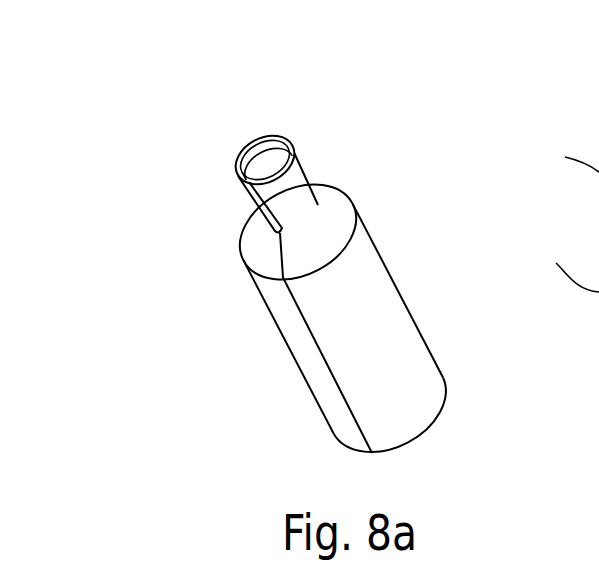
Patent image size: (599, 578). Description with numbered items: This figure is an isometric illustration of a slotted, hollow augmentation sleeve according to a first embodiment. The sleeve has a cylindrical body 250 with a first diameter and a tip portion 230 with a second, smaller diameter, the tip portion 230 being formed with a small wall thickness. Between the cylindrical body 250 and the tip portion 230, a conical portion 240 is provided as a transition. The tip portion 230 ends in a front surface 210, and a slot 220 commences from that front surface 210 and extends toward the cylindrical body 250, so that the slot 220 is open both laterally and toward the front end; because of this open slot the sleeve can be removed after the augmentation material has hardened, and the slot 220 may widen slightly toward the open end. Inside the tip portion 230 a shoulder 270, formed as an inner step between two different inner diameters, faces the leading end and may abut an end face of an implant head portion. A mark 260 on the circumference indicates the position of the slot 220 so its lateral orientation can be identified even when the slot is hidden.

The front surface 210 is at (263, 140).
The slot 220 is at (287, 173).
The tip portion 230 is at (221, 195).
The conical portion 240 is at (222, 249).
The cylindrical body 250 is at (286, 372).
The mark 260 is at (352, 371).
The shoulder 270 is at (247, 142).